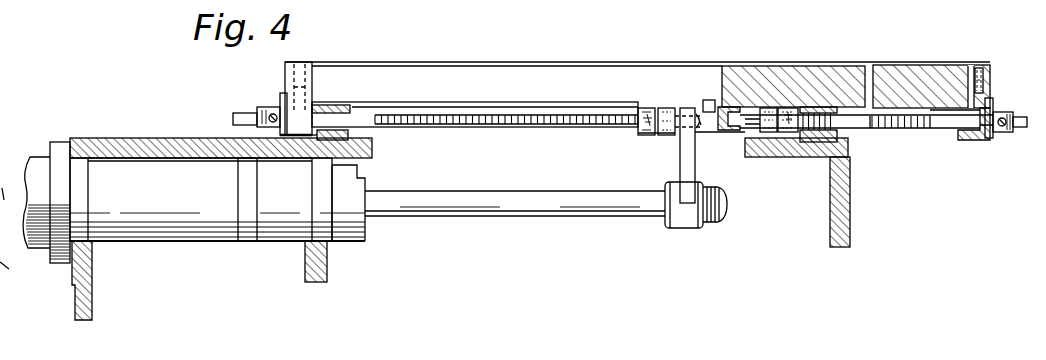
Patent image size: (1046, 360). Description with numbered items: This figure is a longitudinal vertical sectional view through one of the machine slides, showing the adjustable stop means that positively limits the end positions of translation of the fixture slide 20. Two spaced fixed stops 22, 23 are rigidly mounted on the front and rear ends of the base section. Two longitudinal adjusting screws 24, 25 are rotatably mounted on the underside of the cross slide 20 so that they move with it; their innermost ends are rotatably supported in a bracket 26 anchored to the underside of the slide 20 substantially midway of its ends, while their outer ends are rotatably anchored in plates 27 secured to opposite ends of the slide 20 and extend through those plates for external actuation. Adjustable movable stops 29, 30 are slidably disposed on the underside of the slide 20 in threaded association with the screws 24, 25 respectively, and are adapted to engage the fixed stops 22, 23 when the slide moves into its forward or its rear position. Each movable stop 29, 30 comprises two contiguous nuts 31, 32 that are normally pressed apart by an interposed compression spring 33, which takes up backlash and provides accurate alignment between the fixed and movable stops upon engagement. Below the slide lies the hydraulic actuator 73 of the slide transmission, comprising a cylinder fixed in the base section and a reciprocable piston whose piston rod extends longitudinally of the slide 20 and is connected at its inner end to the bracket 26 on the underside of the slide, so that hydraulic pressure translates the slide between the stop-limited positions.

The fixture slide 20 is at (455, 73).
The stop 22 is at (350, 134).
The stop 23 is at (837, 135).
The adjusting screw 24 is at (487, 127).
The adjusting screw 25 is at (927, 128).
The bracket 26 is at (683, 167).
The plate 27 is at (283, 95).
The movable stop 29 is at (645, 140).
The movable stop 30 is at (752, 132).
The nut 31 is at (645, 135).
The nut 32 is at (663, 135).
The compression spring 33 is at (650, 120).
The hydraulic actuator 73 is at (183, 229).